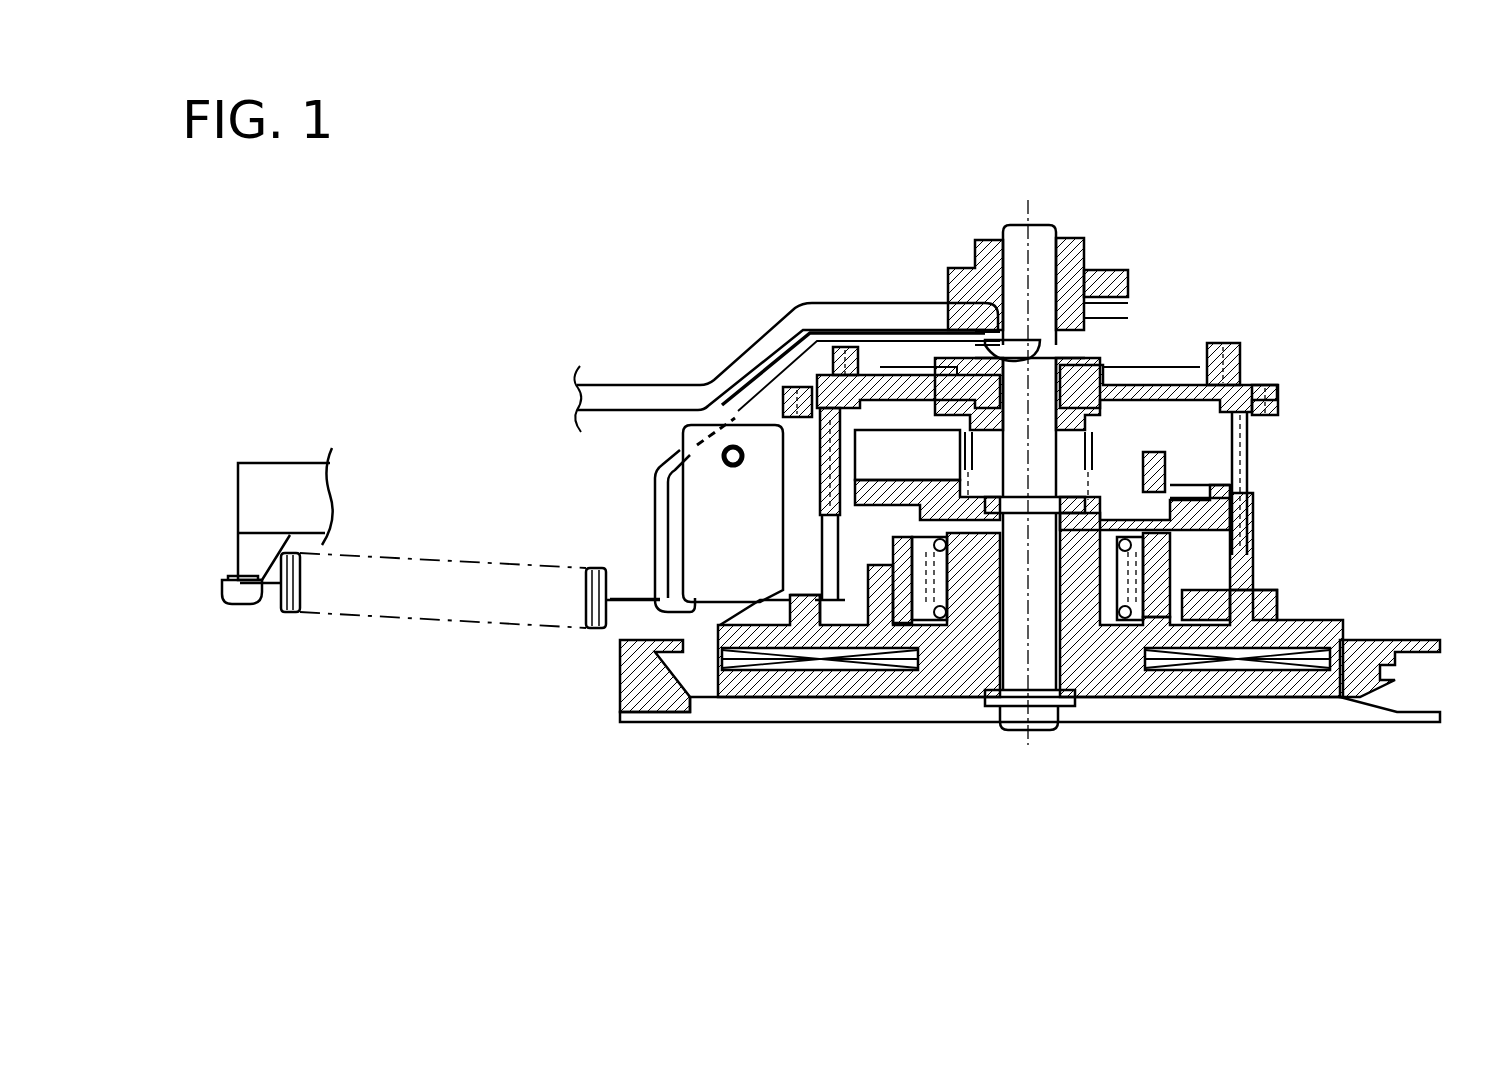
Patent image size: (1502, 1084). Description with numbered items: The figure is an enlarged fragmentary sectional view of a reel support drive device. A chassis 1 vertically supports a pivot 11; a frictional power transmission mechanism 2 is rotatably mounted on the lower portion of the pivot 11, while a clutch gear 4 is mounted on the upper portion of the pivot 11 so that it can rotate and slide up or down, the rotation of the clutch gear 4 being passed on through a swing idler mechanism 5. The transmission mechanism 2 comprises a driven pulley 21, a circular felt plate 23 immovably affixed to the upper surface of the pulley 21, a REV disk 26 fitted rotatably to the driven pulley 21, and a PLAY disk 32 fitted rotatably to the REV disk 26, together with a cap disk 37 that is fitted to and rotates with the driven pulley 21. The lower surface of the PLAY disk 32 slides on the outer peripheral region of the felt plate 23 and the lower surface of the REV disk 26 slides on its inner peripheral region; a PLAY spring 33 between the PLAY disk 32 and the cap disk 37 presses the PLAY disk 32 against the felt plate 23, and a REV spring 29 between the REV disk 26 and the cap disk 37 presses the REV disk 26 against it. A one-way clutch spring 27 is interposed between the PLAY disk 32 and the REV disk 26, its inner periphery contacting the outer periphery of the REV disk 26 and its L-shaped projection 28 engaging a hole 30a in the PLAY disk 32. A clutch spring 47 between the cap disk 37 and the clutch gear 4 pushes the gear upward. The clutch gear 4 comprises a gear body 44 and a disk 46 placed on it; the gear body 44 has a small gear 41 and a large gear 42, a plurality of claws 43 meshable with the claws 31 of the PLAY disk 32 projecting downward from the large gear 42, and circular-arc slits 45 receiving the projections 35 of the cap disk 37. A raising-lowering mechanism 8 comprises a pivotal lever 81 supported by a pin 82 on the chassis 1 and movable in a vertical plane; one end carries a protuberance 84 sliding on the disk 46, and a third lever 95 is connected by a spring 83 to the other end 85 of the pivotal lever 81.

The chassis 1 is at (767, 345).
The frictional power transmission mechanism 2 is at (1368, 525).
The clutch gear 4 is at (1355, 298).
The swing idler mechanism 5 is at (1105, 270).
The raising-lowering mechanism 8 is at (472, 475).
The pivot 11 is at (1035, 225).
The driven pulley 21 is at (1392, 700).
The circular felt plate 23 is at (905, 640).
The REV disk 26 is at (1148, 640).
The one-way clutch spring 27 is at (882, 630).
The L-shaped projection 28 is at (792, 650).
The REV spring 29 is at (933, 625).
The hole 30a is at (740, 628).
The claws 31 is at (1252, 520).
The PLAY disk 32 is at (1278, 602).
The PLAY spring 33 is at (1215, 580).
The projections 35 is at (1168, 470).
The cap disk 37 is at (1247, 480).
The small gear 41 is at (1245, 360).
The large gear 42 is at (1280, 400).
The claws 43 is at (1247, 442).
The gear body 44 is at (1185, 383).
The circular-arc slits 45 is at (1135, 383).
The disk 46 is at (1118, 372).
The clutch spring 47 is at (1098, 432).
The pivotal lever 81 is at (655, 486).
The pin 82 is at (725, 456).
The spring 83 is at (378, 630).
The protuberance 84 is at (1018, 332).
The other end 85 is at (655, 560).
The third lever 95 is at (286, 460).